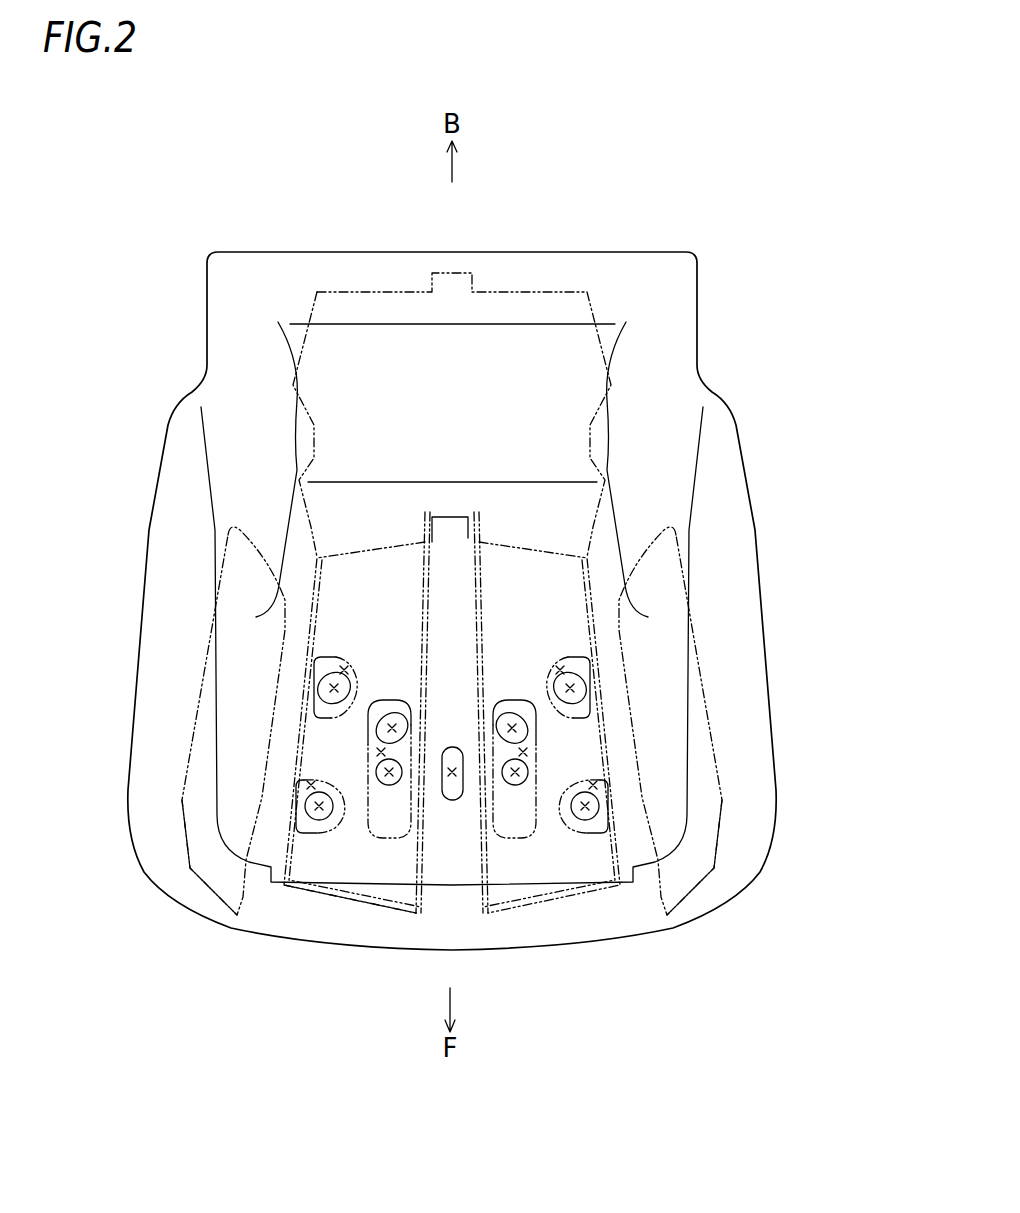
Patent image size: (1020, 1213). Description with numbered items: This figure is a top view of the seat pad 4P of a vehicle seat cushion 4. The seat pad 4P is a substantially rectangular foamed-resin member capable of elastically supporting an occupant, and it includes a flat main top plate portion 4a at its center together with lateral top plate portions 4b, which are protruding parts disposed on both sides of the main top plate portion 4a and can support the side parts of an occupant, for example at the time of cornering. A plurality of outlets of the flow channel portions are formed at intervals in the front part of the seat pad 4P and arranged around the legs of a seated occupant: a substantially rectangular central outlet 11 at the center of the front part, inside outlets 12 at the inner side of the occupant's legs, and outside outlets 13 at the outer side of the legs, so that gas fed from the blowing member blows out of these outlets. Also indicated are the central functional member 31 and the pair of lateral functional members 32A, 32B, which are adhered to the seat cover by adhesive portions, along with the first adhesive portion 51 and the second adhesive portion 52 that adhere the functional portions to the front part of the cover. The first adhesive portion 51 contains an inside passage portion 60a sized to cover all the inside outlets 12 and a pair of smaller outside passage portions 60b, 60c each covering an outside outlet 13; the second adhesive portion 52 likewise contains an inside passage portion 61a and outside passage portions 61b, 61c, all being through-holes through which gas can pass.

The seat cushion 4 is at (452, 545).
The seat pad 4P is at (656, 214).
The main top plate portion 4a is at (438, 591).
The lateral top plate portions 4b is at (158, 634).
The first adhesive portion 51 is at (372, 565).
The second adhesive portion 52 is at (536, 565).
The central outlet 11 is at (452, 800).
The inside outlets 12 is at (392, 728).
The outside outlets 13 is at (334, 688).
The inside passage portion 60a is at (372, 752).
The outside passage portion 60b is at (344, 670).
The outside passage portion 60c is at (311, 785).
The inside passage portion 61a is at (532, 752).
The outside passage portion 61b is at (560, 670).
The outside passage portion 61c is at (593, 785).
The central functional member 31 is at (355, 912).
The lateral functional member 32A is at (197, 865).
The lateral functional member 32B is at (708, 865).